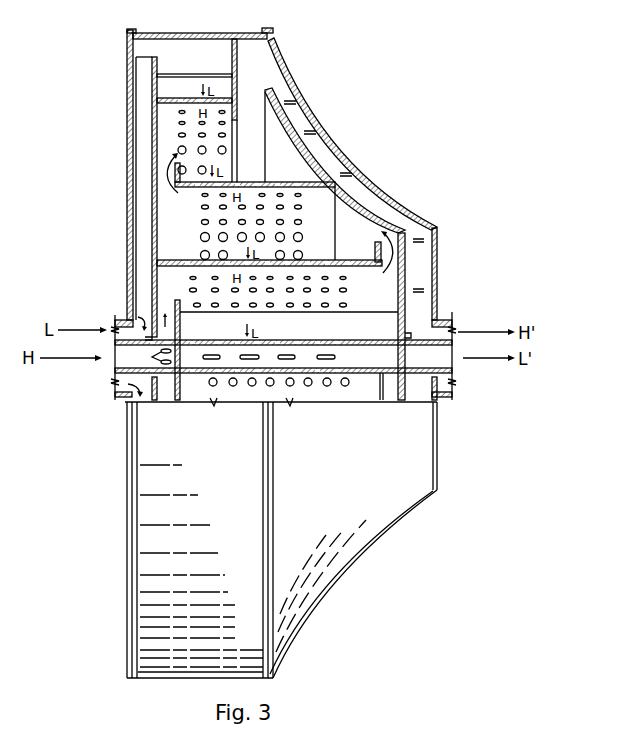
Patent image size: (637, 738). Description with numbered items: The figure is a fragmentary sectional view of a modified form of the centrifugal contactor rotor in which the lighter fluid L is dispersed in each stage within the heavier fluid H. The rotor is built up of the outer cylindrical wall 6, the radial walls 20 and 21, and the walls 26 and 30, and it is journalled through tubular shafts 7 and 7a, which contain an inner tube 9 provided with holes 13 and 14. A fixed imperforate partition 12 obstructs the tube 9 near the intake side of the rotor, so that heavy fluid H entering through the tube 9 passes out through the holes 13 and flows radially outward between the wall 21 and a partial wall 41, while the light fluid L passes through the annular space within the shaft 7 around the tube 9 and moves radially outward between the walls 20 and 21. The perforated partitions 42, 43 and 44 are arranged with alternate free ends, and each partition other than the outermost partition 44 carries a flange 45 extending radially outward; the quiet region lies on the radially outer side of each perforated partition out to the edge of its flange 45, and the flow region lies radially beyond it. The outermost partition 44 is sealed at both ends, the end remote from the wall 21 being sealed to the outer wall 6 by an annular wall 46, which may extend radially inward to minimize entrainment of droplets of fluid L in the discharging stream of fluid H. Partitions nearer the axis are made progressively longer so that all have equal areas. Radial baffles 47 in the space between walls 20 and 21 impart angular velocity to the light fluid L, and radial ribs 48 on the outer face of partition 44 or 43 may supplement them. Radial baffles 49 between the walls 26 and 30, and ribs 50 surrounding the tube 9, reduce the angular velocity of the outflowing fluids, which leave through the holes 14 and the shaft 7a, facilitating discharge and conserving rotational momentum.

The outer cylindrical wall 6 is at (202, 33).
The tubular shaft 7 is at (127, 322).
The tubular shaft 7a is at (450, 312).
The inner tube 9 is at (117, 368).
The imperforate partition 12 is at (283, 380).
The perforations 13 is at (152, 358).
The perforations 14 is at (337, 355).
The radial wall 20 is at (127, 47).
The radial wall 21 is at (152, 120).
The rotor wall 26 is at (293, 125).
The rotor wall 30 is at (285, 63).
The partial wall 41 is at (176, 302).
The perforated partition 42 is at (157, 260).
The perforated partition 43 is at (190, 188).
The outermost perforated partition 44 is at (157, 100).
The flange 45 is at (175, 168).
The annular wall 46 is at (239, 55).
The radial baffles 47 is at (142, 147).
The radial ribs 48 is at (170, 75).
The radial baffles 49 is at (322, 153).
The ribs 50 is at (355, 318).